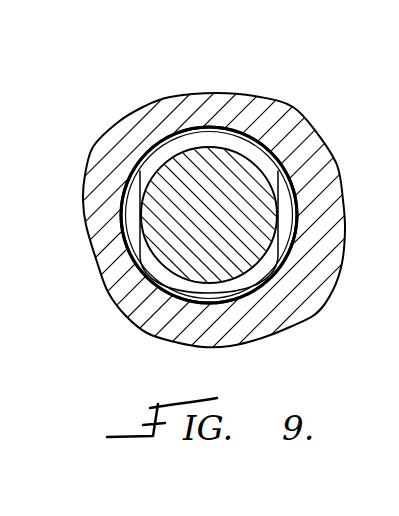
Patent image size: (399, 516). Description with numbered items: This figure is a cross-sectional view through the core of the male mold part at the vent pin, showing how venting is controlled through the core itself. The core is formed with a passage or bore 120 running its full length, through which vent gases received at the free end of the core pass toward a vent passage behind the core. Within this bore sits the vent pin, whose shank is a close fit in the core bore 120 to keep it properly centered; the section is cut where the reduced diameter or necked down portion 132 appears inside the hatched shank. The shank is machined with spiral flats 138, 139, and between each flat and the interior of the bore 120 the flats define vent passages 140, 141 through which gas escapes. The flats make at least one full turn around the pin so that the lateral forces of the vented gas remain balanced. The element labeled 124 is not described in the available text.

The core bore 120 is at (127, 252).
The hub 124 is at (199, 100).
The necked down portion 132 is at (240, 162).
The spiral flat 138 is at (140, 183).
The spiral flat 139 is at (286, 182).
The vent passage 140 is at (127, 228).
The vent passage 141 is at (293, 218).